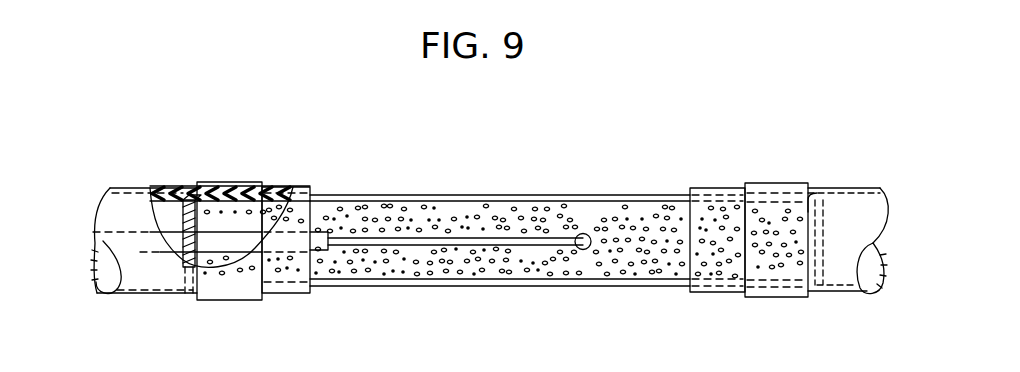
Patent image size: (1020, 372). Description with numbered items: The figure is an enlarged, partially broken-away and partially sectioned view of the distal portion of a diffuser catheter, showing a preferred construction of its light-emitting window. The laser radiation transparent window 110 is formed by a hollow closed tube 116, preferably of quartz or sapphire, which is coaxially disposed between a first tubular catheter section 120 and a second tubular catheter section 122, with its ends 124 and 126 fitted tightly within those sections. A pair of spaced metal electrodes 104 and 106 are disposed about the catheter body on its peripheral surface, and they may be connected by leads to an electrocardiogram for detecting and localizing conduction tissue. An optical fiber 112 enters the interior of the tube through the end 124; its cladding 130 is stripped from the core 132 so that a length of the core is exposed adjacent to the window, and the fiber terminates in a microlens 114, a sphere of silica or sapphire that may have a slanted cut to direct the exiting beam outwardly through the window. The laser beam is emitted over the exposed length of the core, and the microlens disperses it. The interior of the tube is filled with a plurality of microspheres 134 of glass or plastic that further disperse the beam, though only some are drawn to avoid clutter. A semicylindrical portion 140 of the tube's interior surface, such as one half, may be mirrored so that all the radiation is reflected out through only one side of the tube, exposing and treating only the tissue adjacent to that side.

The metal electrode 104 is at (217, 300).
The metal electrode 106 is at (796, 298).
The laser radiation transparent window 110 is at (533, 222).
The optical fiber 112 is at (241, 241).
The microlens 114 is at (588, 235).
The hollow closed tube 116 is at (383, 195).
The first tubular catheter section 120 is at (107, 218).
The second tubular catheter section 122 is at (881, 212).
The tube end 124 is at (185, 218).
The tube end 126 is at (823, 222).
The cladding 130 is at (328, 250).
The core 132 is at (458, 245).
The microspheres 134 is at (465, 273).
The semicylindrical portion 140 is at (660, 220).